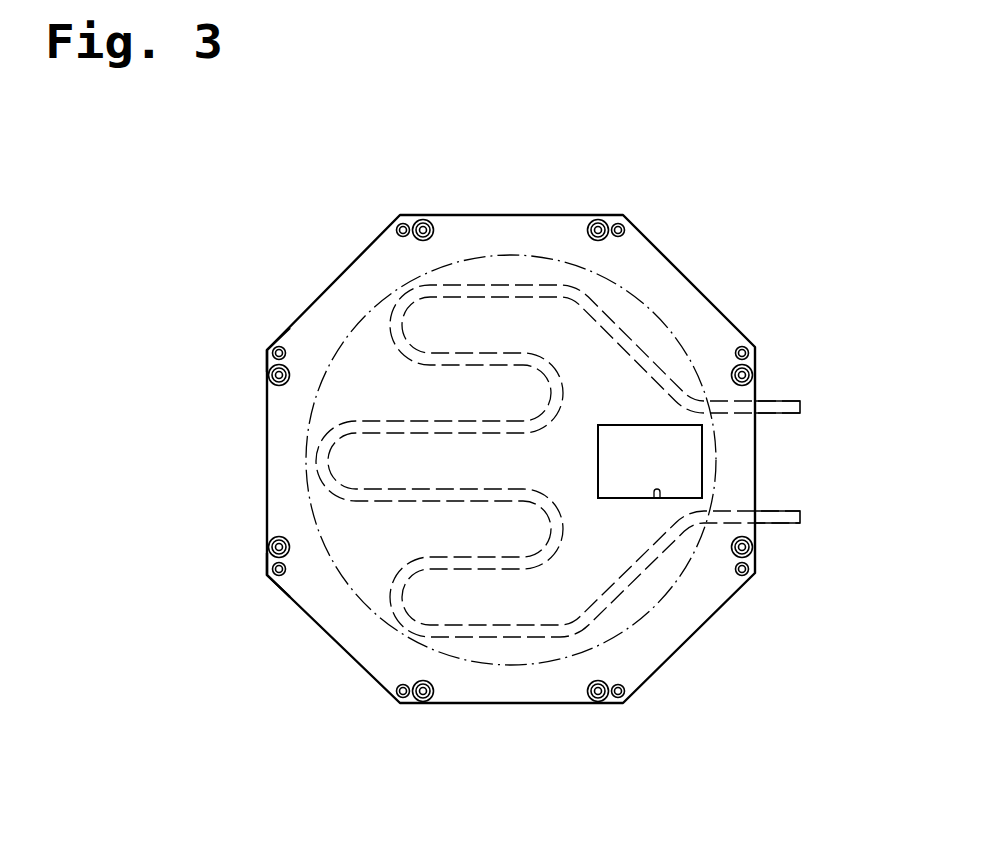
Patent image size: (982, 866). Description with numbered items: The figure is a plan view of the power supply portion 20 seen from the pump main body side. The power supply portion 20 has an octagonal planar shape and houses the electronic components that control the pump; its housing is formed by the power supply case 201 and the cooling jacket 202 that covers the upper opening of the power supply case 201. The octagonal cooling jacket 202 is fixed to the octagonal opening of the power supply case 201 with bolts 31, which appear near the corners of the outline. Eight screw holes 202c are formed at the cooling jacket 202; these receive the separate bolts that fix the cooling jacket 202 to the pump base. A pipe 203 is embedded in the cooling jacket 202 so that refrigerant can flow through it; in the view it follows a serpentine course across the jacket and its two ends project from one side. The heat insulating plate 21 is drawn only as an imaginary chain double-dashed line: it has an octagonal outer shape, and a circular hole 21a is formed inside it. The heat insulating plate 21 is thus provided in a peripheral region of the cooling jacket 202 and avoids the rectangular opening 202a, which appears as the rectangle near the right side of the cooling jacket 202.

The power supply portion 20 is at (545, 828).
The heat insulating plate 21 is at (717, 303).
The circular hole 21a is at (655, 338).
The bolts 31 is at (267, 385).
The power supply case 201 is at (668, 453).
The cooling jacket 202 is at (500, 315).
The rectangular opening 202a is at (654, 499).
The screw holes 202c is at (273, 345).
The pipe 203 is at (787, 523).